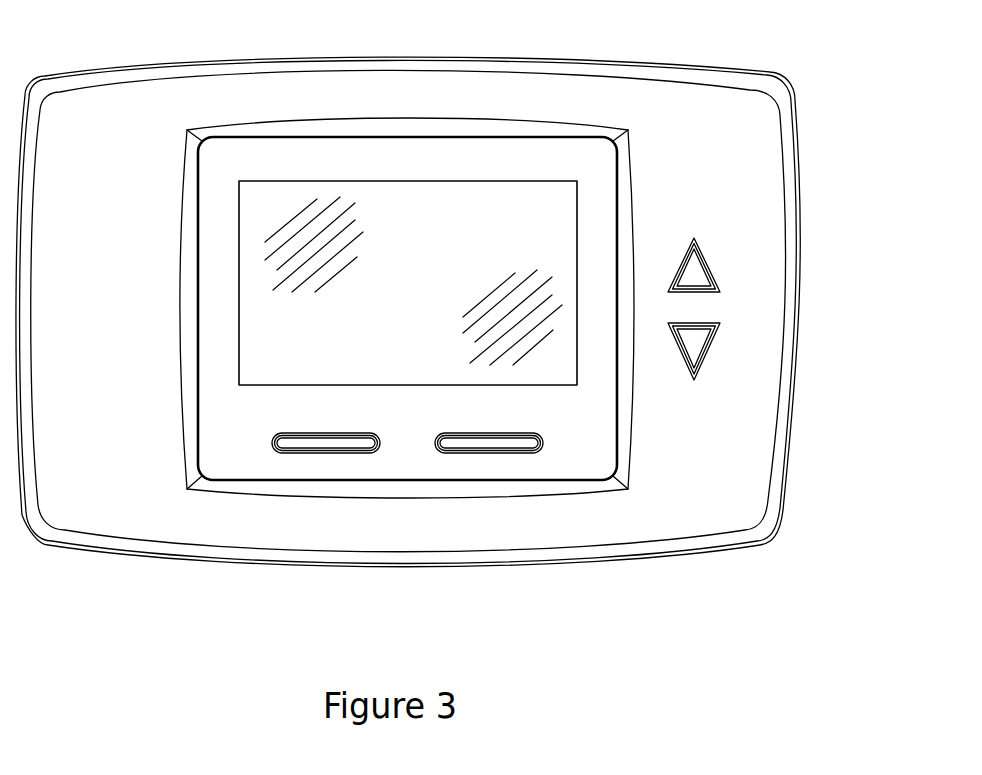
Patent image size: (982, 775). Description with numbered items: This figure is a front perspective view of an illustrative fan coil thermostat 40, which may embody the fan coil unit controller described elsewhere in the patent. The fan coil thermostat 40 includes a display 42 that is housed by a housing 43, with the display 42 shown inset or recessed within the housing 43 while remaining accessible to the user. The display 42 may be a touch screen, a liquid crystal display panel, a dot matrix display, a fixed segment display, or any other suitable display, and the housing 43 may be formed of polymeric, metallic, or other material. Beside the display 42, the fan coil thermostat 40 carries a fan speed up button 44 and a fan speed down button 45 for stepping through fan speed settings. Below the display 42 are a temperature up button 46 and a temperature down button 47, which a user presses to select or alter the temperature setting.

The fan coil thermostat 40 is at (784, 70).
The display 42 is at (254, 195).
The housing 43 is at (735, 497).
The fan speed up button 44 is at (711, 263).
The fan speed down button 45 is at (711, 353).
The temperature up button 46 is at (327, 453).
The temperature down button 47 is at (490, 453).